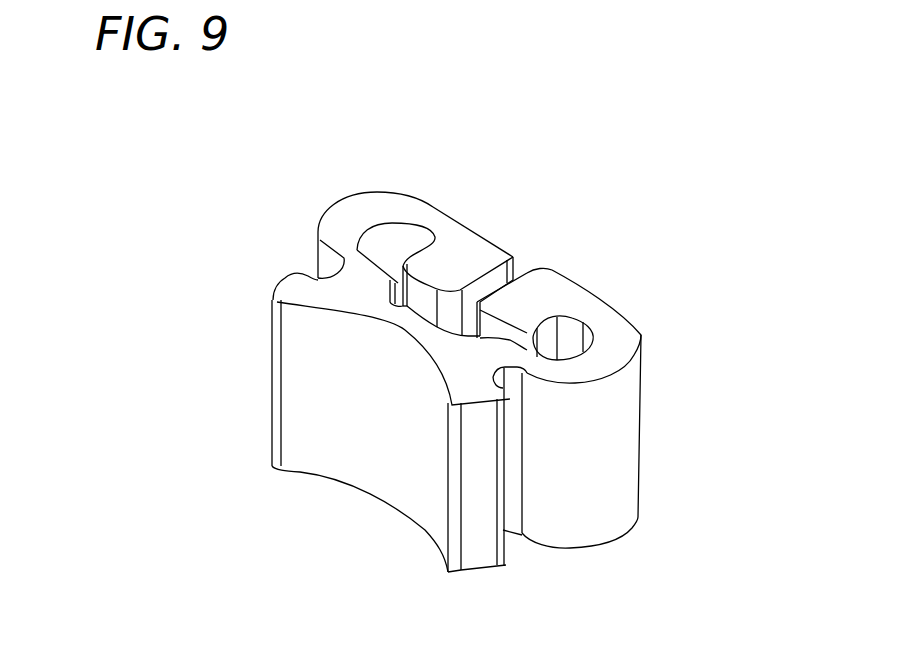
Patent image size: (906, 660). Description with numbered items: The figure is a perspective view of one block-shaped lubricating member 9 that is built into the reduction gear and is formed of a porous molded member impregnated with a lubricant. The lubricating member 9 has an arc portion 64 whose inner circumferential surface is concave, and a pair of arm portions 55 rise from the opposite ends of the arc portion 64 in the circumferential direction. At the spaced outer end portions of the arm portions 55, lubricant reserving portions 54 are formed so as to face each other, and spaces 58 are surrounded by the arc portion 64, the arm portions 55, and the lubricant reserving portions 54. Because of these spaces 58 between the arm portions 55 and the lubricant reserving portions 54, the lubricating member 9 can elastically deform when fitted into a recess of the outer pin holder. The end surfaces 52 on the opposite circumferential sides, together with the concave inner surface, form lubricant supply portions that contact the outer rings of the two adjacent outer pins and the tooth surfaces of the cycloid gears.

The block-shaped lubricating member 9 is at (503, 230).
The end surface 52 is at (277, 282).
The lubricant reserving portion 54 is at (477, 265).
The arm portion 55 is at (345, 208).
The space 58 is at (398, 243).
The arc portion 64 is at (393, 315).